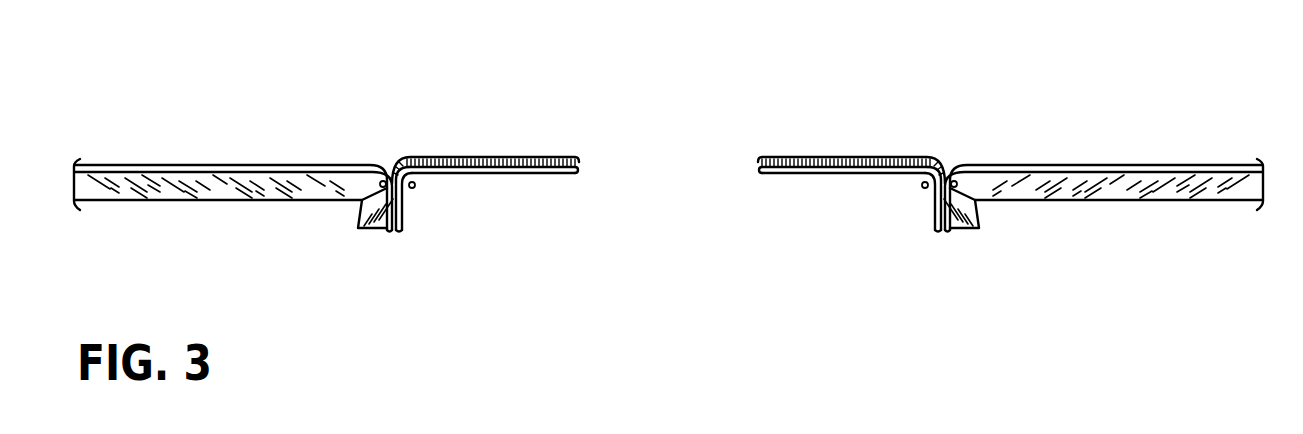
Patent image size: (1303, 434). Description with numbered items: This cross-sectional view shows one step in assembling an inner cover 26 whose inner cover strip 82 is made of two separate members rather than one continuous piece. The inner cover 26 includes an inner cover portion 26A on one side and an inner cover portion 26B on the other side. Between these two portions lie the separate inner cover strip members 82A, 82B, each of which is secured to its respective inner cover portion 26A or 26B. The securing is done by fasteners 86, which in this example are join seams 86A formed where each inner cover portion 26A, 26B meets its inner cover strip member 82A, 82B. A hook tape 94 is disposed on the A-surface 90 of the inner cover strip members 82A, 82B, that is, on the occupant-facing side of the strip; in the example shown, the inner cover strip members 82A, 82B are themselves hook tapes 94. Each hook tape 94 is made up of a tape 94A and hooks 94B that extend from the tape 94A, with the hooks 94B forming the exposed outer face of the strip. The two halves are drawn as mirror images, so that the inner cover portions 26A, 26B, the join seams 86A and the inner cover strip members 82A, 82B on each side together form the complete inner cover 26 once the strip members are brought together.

The inner cover 26 is at (105, 187).
The inner cover portion 26A is at (196, 187).
The inner cover portion 26B is at (1131, 187).
The inner cover strip 82 is at (440, 157).
The inner cover strip member 82A is at (473, 157).
The inner cover strip member 82B is at (828, 157).
The fastener 86 is at (422, 190).
The join seam 86A is at (408, 207).
The A-surface 90 is at (247, 168).
The hook tape 94 is at (518, 157).
The tape 94A is at (547, 173).
The hooks 94B is at (558, 157).